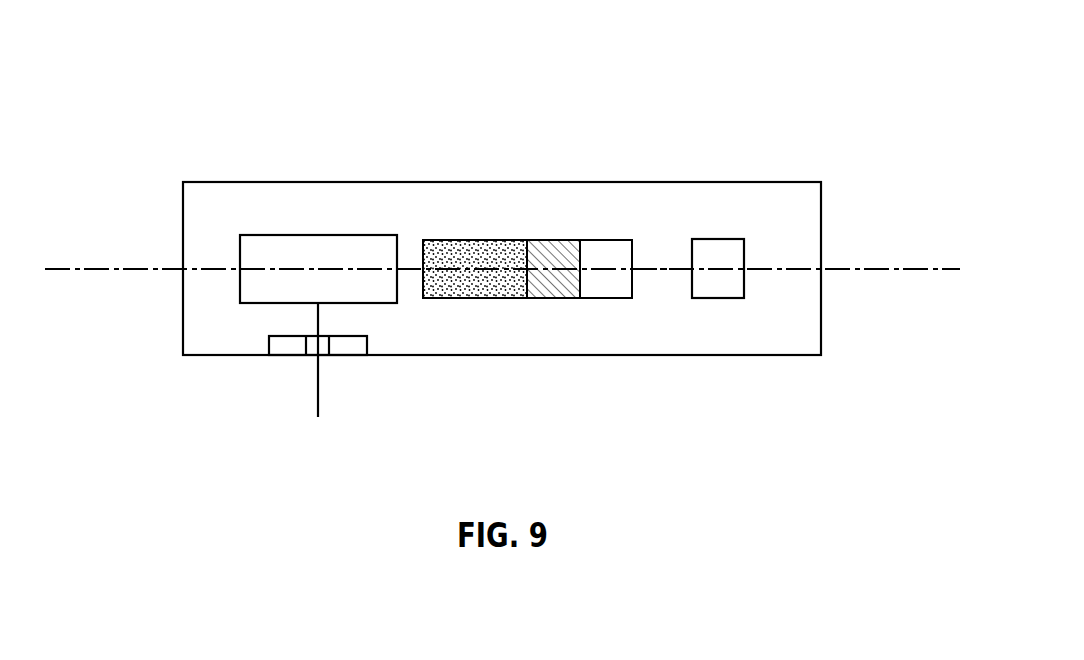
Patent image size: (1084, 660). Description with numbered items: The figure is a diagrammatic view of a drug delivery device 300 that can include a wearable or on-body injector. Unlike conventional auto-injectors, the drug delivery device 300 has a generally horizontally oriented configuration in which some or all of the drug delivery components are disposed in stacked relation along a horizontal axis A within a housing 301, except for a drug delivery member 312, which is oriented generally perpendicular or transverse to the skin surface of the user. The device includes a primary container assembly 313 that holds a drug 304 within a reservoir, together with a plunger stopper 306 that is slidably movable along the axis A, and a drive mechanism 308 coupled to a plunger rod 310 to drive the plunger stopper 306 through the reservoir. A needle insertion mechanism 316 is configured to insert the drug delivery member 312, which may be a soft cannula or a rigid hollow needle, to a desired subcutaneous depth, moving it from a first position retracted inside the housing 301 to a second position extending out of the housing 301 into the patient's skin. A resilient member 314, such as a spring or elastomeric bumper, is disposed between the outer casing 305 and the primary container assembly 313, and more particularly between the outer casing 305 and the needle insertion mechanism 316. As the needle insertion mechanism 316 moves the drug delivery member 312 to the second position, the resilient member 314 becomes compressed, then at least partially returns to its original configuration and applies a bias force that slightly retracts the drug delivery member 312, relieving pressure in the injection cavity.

The drug delivery device 300 is at (838, 52).
The horizontal axis A is at (97, 269).
The housing 301 is at (178, 341).
The outer casing 305 is at (275, 182).
The needle insertion mechanism 316 is at (332, 250).
The resilient member 314 is at (288, 347).
The drug delivery member 312 is at (318, 380).
The drug 304 is at (500, 248).
The plunger stopper 306 is at (543, 278).
The primary container assembly 313 is at (597, 235).
The plunger rod 310 is at (651, 269).
The drive mechanism 308 is at (716, 286).